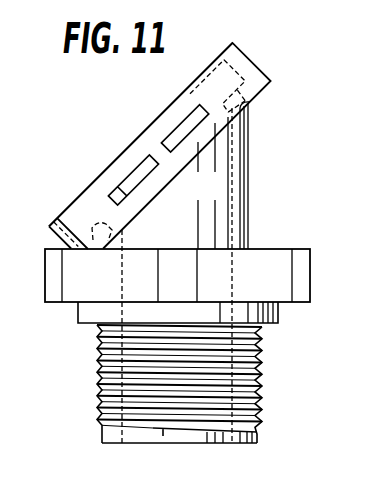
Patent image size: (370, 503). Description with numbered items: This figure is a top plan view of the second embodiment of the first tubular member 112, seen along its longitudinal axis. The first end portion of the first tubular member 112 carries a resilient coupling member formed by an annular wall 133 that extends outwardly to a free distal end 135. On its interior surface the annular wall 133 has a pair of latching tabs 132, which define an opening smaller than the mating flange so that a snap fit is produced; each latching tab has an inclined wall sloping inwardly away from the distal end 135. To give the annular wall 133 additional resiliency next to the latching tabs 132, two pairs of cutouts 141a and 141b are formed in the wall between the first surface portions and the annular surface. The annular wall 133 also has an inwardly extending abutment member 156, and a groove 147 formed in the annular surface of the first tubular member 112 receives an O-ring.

The first tubular member 112 is at (82, 191).
The latching tabs 132 is at (186, 90).
The annular wall 133 is at (245, 55).
The free distal end 135 is at (66, 209).
The cutouts 141a is at (134, 189).
The cutouts 141b is at (187, 150).
The groove 147 is at (245, 100).
The abutment member 156 is at (73, 233).